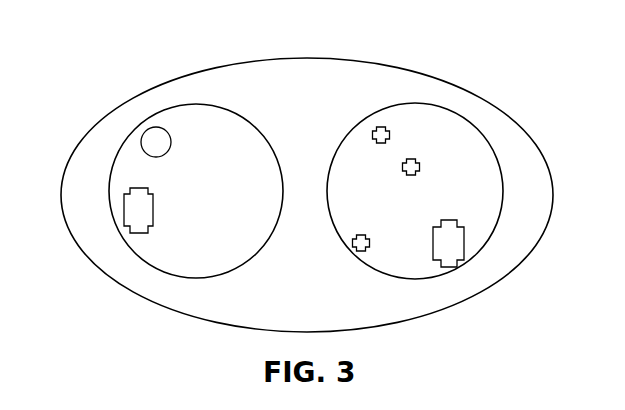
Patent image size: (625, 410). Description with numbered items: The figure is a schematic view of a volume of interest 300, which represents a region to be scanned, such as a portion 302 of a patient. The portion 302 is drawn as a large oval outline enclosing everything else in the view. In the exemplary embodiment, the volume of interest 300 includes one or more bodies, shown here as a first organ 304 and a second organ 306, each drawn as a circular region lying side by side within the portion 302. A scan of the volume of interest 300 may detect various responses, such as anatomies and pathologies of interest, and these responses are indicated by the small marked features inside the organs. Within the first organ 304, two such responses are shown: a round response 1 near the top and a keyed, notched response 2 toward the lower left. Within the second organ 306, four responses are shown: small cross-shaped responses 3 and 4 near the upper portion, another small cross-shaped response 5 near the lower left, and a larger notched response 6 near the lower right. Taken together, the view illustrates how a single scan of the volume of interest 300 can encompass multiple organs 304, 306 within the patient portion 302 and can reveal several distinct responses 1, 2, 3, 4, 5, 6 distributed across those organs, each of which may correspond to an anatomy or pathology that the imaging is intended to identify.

The volume of interest 300 is at (306, 166).
The portion of patient 302 is at (350, 70).
The first organ 304 is at (252, 204).
The second organ 306 is at (400, 212).
The response 1 is at (168, 142).
The response 2 is at (150, 210).
The response 3 is at (392, 138).
The response 4 is at (422, 168).
The response 5 is at (372, 244).
The response 6 is at (458, 243).